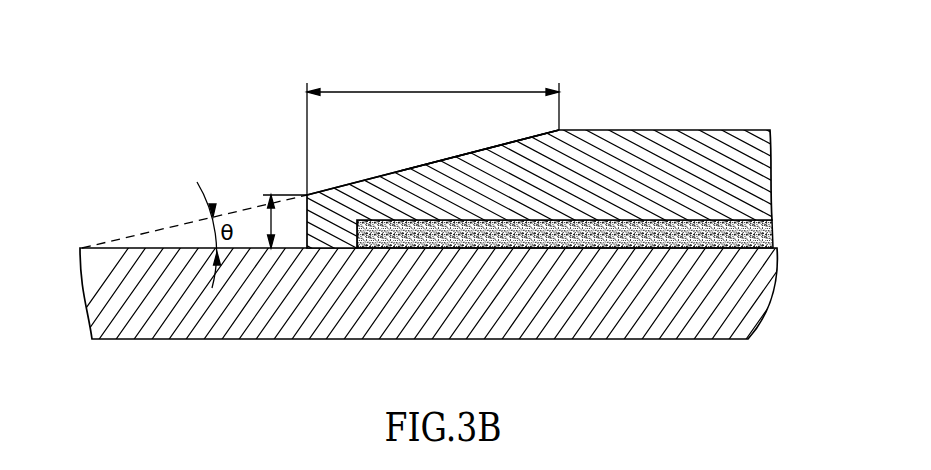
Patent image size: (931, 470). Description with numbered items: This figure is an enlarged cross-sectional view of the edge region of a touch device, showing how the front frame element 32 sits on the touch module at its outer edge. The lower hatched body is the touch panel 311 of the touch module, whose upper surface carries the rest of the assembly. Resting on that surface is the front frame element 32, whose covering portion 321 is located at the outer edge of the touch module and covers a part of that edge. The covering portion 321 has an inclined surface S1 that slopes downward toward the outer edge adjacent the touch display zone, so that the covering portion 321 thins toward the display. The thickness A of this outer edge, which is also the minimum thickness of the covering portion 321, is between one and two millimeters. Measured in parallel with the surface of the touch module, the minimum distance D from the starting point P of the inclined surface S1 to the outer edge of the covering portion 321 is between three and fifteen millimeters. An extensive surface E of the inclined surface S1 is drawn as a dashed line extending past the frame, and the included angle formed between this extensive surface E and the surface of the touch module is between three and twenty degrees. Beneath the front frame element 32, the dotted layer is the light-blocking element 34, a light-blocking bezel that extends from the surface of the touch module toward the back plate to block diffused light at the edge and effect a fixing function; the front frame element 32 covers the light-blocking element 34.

The touch panel 311 is at (693, 330).
The front frame element 32 is at (722, 143).
The covering portion 321 is at (393, 185).
The light-blocking element 34 is at (762, 238).
The inclined surface S1 is at (427, 160).
The starting point of the inclined surface P is at (559, 128).
The minimum distance D is at (433, 130).
The thickness of the outer edge A is at (285, 221).
The extensive surface E is at (163, 233).